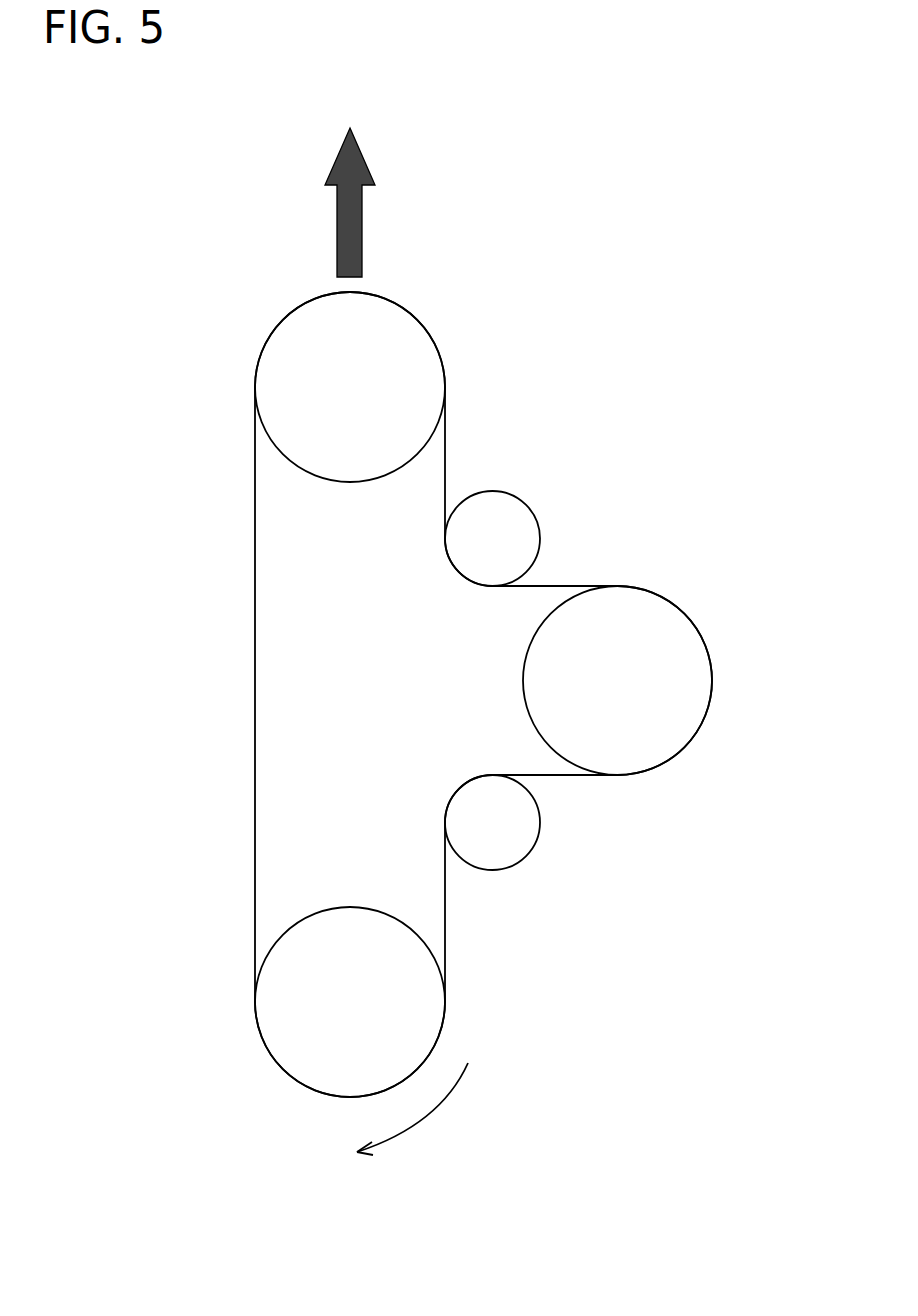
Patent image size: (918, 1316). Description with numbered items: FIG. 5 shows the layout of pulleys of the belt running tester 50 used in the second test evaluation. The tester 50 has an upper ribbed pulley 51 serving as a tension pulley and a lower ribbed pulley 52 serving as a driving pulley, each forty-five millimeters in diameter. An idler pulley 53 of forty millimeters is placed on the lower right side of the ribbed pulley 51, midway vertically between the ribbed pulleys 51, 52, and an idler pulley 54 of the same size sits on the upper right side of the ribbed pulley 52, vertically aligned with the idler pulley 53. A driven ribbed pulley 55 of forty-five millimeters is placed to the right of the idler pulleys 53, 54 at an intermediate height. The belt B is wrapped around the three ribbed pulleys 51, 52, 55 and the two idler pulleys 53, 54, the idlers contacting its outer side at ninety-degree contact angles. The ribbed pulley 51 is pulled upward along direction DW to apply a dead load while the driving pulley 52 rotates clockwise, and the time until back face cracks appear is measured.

The belt running tester 50 is at (632, 343).
The ribbed pulley 51 is at (278, 343).
The ribbed pulley 52 is at (278, 1027).
The idler pulley 53 is at (517, 535).
The idler pulley 54 is at (517, 830).
The ribbed pulley 55 is at (693, 693).
The belt B is at (255, 763).
The conveyance direction DW is at (380, 202).